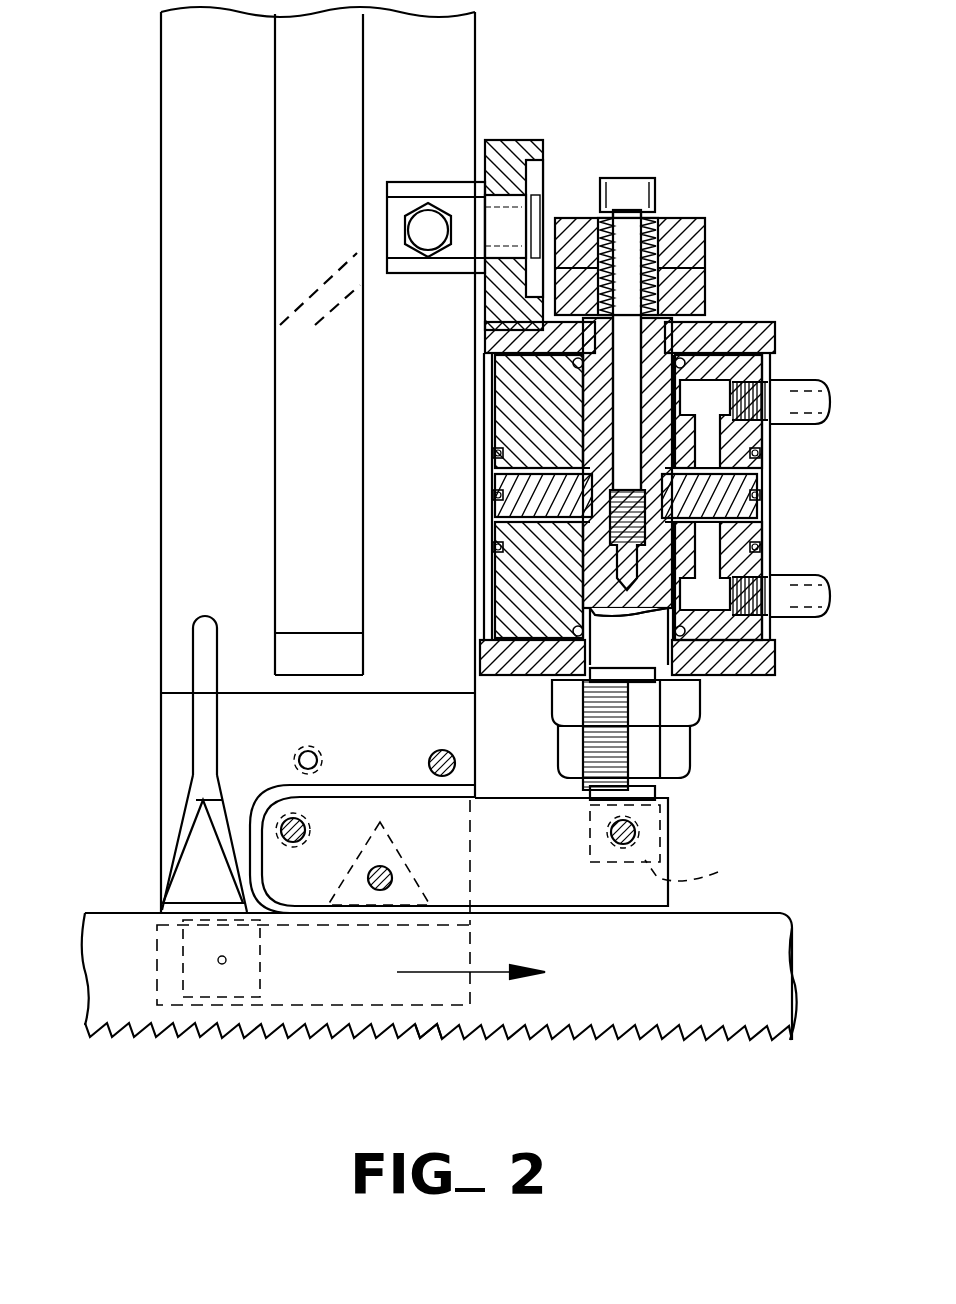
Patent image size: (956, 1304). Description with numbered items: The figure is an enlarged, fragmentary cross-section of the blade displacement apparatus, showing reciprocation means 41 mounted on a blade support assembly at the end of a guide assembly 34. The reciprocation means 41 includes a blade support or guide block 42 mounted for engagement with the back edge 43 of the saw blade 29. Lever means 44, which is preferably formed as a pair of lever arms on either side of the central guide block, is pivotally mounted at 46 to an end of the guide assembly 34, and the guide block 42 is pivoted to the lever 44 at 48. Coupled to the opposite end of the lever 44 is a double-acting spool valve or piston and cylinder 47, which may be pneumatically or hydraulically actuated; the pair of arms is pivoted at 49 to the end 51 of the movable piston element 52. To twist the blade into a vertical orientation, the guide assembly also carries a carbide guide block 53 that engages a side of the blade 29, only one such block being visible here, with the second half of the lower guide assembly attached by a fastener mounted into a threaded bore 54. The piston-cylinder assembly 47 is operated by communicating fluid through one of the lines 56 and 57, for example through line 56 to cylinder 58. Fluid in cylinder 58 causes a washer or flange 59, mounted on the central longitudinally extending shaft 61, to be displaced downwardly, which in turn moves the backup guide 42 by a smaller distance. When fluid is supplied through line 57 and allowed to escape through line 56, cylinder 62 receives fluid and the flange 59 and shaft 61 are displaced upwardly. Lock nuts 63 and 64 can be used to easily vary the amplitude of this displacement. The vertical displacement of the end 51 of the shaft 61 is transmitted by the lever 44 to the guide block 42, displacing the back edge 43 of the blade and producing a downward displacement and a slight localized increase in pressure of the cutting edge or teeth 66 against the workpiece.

The saw blade 29 is at (690, 1005).
The guide assembly 34 is at (160, 406).
The reciprocation means 41 is at (662, 134).
The guide block 42 is at (413, 867).
The back edge 43 is at (762, 912).
The lever means 44 is at (565, 892).
The pivot 46 is at (305, 830).
The piston and cylinder 47 is at (725, 698).
The pivot 48 is at (388, 868).
The pivot 49 is at (640, 832).
The end 51 is at (698, 871).
The movable piston element 52 is at (607, 637).
The guide block 53 is at (260, 975).
The threaded bore 54 is at (318, 756).
The line 56 is at (800, 380).
The line 57 is at (799, 620).
The cylinder 58 is at (497, 455).
The flange 59 is at (510, 500).
The shaft 61 is at (660, 347).
The cylinder 62 is at (500, 545).
The lock nut 63 is at (705, 280).
The lock nut 64 is at (560, 754).
The cutting edge 66 is at (420, 1034).